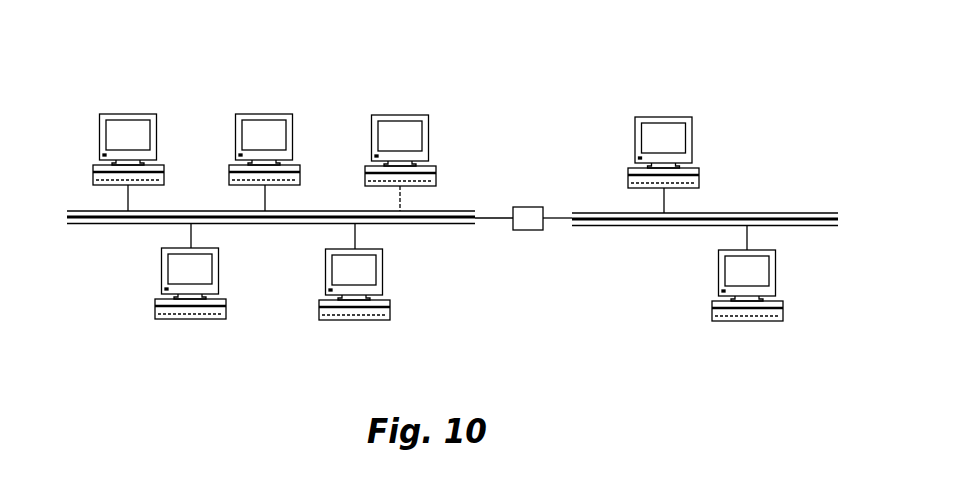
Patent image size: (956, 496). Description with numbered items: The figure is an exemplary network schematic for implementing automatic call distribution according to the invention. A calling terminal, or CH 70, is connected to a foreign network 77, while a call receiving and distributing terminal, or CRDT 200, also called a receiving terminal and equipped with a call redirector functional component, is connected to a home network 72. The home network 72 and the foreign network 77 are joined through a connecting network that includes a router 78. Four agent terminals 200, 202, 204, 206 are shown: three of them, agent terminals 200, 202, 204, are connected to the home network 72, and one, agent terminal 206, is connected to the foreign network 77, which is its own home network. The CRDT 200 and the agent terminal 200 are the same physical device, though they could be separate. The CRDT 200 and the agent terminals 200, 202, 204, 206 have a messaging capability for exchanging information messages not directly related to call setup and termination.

The calling terminal (CH) 70 is at (776, 265).
The home network 72 is at (118, 245).
The foreign network 77 is at (748, 192).
The router 78 is at (522, 203).
The call receiving and distributing terminal (CRDT) 200 is at (218, 265).
The agent terminal 202 is at (120, 52).
The agent terminal 204 is at (382, 58).
The agent terminal 206 is at (645, 62).